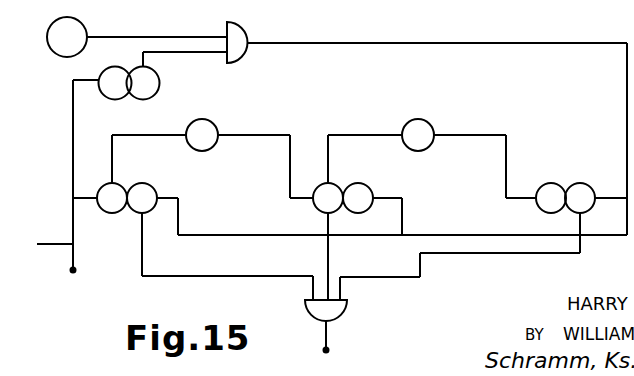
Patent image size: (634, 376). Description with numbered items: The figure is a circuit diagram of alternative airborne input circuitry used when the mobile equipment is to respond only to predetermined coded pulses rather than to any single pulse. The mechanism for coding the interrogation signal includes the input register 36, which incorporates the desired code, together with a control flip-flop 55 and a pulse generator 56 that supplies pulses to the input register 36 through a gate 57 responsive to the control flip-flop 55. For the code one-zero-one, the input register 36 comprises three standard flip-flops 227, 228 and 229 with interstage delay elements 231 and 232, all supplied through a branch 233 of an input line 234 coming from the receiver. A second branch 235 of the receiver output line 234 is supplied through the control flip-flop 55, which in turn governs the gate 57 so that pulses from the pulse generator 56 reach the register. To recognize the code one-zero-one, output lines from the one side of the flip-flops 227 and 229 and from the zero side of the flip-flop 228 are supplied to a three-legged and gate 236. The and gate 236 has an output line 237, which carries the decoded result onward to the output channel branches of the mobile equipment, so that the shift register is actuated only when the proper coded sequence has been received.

The pulse generator 56 is at (85, 23).
The gate 57 is at (249, 30).
The control flip-flop 55 is at (100, 71).
The second branch 235 is at (73, 140).
The input line 234 is at (52, 243).
The branch 233 is at (80, 203).
The flip-flop 227 is at (150, 184).
The interstage delay element 231 is at (214, 120).
The input register 36 is at (258, 217).
The flip-flop 228 is at (368, 186).
The interstage delay element 232 is at (427, 120).
The flip-flop 229 is at (553, 183).
The three-legged and gate 236 is at (348, 312).
The output line 237 is at (330, 338).